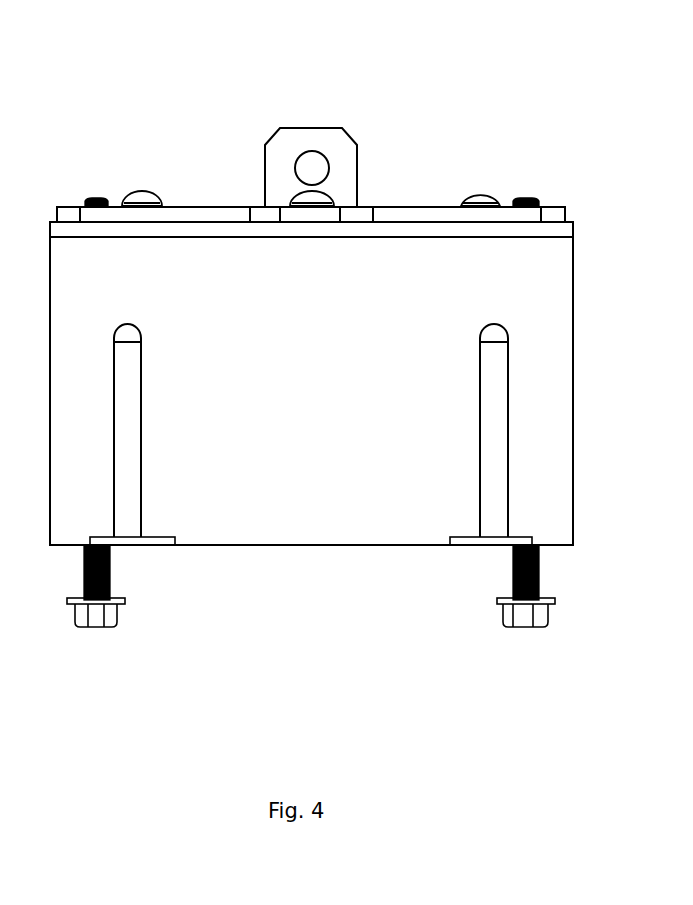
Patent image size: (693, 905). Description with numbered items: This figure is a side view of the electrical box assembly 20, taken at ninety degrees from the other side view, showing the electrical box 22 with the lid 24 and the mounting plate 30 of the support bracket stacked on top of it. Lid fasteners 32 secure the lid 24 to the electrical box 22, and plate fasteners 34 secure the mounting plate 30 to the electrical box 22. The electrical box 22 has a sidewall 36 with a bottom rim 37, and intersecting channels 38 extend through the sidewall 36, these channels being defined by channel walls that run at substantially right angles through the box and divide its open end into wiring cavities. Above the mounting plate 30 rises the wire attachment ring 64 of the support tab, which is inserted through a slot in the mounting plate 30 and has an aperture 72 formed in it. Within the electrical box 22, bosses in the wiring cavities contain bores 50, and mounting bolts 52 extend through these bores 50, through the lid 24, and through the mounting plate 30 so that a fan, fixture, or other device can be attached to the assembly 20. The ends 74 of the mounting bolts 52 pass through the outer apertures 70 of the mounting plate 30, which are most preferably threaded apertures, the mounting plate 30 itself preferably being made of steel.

The electrical box assembly 20 is at (160, 121).
The electrical box 22 is at (573, 382).
The lid 24 is at (567, 228).
The mounting plate 30 is at (545, 215).
The lid fasteners 32 is at (318, 198).
The plate fasteners 34 is at (481, 195).
The sidewall 36 is at (324, 393).
The bottom rim 37 is at (380, 548).
The intersecting channels 38 is at (128, 450).
The bores 50 is at (110, 548).
The mounting bolts 52 is at (540, 572).
The wire attachment ring 64 is at (353, 132).
The outer apertures 70 is at (540, 206).
The aperture 72 is at (309, 163).
The ends 74 is at (92, 200).